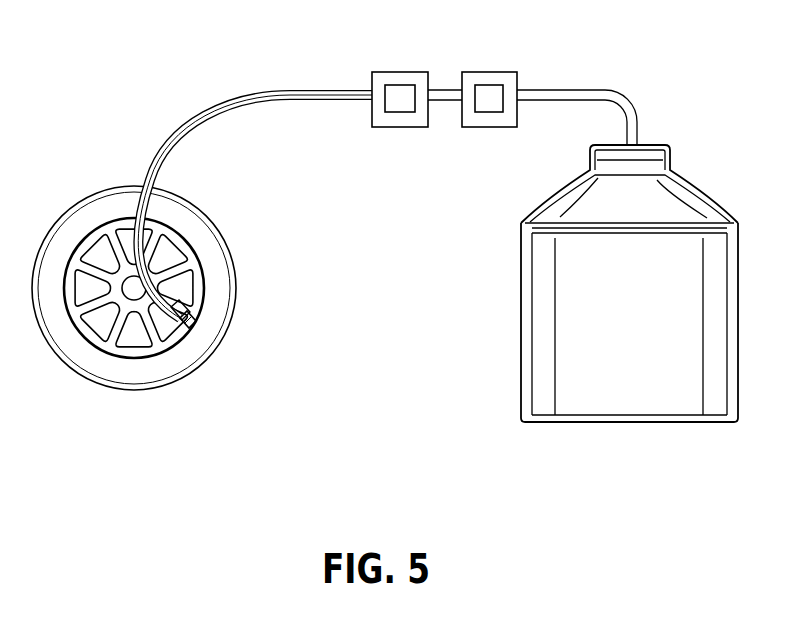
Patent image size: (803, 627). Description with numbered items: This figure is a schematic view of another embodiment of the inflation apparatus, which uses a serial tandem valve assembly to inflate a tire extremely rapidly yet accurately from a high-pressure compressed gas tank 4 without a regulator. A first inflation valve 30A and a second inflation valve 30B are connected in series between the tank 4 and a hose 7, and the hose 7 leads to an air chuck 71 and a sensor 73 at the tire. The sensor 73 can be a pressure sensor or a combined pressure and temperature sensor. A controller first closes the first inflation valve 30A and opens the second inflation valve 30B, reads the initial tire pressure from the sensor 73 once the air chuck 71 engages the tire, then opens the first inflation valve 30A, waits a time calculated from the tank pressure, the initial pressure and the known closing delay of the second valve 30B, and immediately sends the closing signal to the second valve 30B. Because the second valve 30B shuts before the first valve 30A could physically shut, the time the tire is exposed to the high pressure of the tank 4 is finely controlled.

The tank 4 is at (596, 276).
The hose 7 is at (160, 146).
The first inflation valve 30A is at (490, 98).
The second inflation valve 30B is at (400, 98).
The air chuck 71 is at (186, 333).
The sensor 73 is at (185, 308).